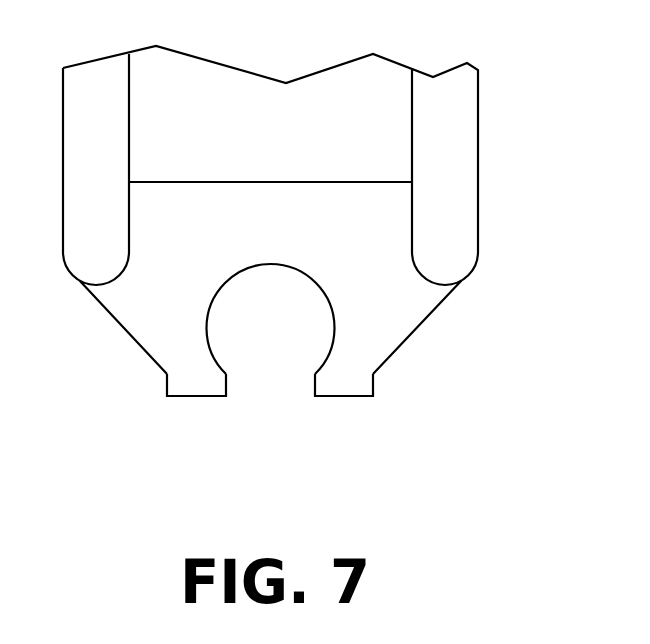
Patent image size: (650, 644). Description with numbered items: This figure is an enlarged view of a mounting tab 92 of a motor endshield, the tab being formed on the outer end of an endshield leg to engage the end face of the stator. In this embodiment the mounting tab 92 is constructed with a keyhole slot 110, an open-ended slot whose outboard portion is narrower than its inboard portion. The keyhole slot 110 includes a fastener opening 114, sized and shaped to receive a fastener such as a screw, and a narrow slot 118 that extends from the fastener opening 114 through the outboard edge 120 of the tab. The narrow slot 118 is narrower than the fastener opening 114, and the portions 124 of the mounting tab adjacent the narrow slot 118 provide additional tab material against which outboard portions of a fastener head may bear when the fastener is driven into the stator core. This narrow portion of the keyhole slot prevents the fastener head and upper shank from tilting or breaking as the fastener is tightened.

The mounting tab 92 is at (460, 111).
The keyhole slot 110 is at (238, 409).
The fastener opening 114 is at (312, 280).
The narrow slot 118 is at (276, 389).
The outboard edge 120 is at (360, 400).
The portions of the mounting tab 124 is at (193, 385).